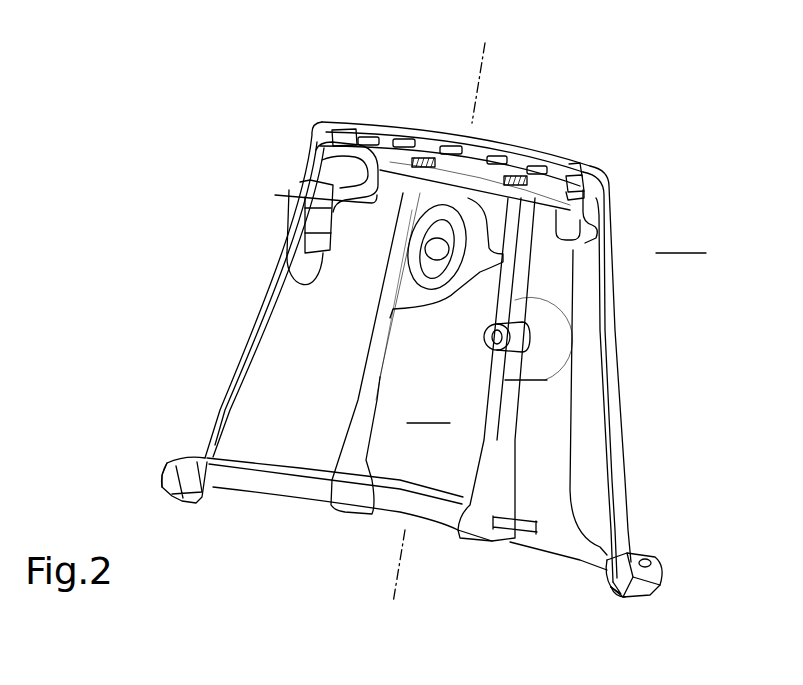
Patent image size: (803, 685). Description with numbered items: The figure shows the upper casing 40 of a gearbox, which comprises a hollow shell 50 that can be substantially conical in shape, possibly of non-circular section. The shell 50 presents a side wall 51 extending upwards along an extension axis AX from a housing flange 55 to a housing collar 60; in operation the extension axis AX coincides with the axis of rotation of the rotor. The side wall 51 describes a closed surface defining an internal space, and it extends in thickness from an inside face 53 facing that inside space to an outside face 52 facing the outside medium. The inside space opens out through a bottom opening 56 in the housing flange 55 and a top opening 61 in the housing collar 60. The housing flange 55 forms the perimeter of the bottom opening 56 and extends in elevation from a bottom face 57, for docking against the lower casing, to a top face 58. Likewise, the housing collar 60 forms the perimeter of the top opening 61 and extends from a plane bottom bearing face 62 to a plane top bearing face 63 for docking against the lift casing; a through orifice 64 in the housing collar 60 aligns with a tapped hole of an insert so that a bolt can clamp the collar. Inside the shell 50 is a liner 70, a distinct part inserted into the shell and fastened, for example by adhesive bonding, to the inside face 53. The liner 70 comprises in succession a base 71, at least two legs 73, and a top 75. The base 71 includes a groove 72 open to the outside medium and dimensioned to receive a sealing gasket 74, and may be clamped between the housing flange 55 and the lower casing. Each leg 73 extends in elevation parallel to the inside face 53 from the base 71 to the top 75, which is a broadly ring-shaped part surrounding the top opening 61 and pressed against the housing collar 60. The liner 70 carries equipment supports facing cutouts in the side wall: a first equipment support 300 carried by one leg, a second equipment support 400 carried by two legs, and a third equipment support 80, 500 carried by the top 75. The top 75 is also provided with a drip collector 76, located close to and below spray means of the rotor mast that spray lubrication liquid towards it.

The extension axis AX is at (484, 64).
The upper casing 40 is at (684, 401).
The shell 50 is at (632, 486).
The side wall 51 is at (620, 447).
The outside face 52 is at (638, 354).
The inside face 53 is at (256, 342).
The housing flange 55 is at (657, 579).
The bottom opening 56 is at (524, 566).
The bottom face 57 is at (638, 602).
The top face 58 is at (652, 560).
The housing collar 60 is at (600, 170).
The top opening 61 is at (516, 140).
The bottom bearing face 62 is at (598, 220).
The top bearing face 63 is at (575, 176).
The through orifice 64 is at (583, 171).
The liner 70 is at (344, 523).
The base 71 is at (258, 499).
The groove 72 is at (198, 506).
The leg 73 is at (375, 426).
The sealing gasket 74 is at (168, 464).
The top 75 is at (275, 195).
The drip collector 76 is at (377, 192).
The equipment support 80 is at (457, 289).
The first equipment support 300 is at (522, 337).
The second equipment support 400 is at (438, 270).
The third equipment support 500 is at (306, 290).